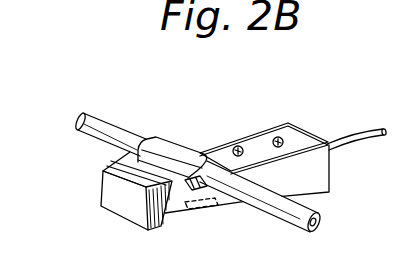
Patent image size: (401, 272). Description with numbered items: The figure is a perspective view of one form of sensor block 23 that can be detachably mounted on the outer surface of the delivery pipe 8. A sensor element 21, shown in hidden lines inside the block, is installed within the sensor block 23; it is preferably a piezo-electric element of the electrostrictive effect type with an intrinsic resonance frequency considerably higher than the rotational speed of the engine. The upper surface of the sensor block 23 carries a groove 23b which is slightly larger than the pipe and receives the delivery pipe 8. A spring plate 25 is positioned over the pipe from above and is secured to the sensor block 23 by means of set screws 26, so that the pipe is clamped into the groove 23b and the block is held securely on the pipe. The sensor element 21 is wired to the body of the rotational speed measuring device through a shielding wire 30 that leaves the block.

The delivery pipe 8 is at (127, 131).
The sensor element 21 is at (203, 209).
The sensor block 23 is at (127, 210).
The groove 23b is at (192, 184).
The spring plate 25 is at (215, 150).
The set screws 26 is at (243, 147).
The shielding wire 30 is at (360, 140).